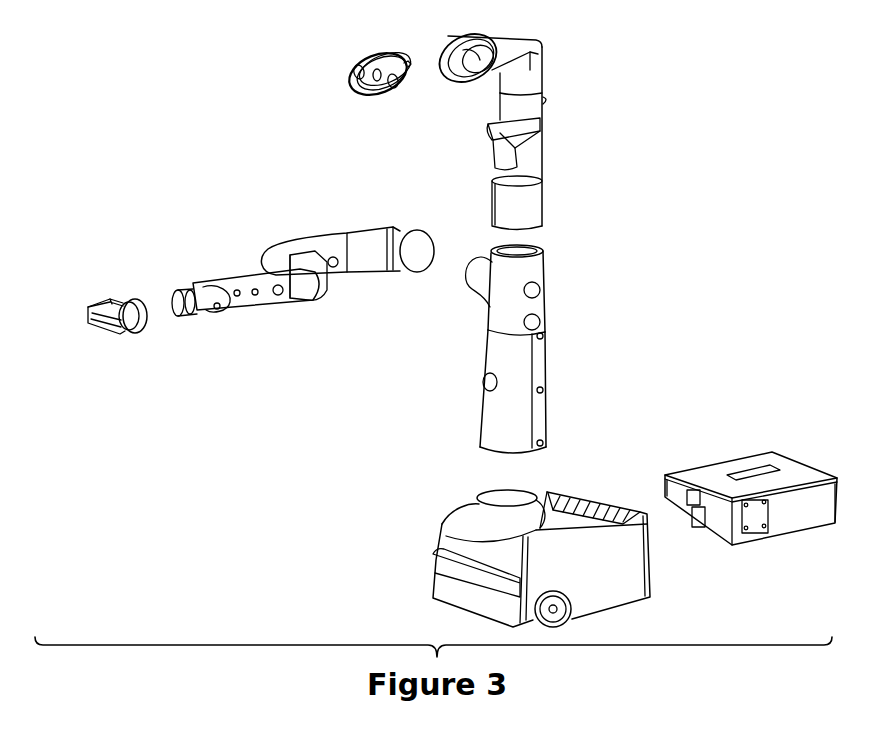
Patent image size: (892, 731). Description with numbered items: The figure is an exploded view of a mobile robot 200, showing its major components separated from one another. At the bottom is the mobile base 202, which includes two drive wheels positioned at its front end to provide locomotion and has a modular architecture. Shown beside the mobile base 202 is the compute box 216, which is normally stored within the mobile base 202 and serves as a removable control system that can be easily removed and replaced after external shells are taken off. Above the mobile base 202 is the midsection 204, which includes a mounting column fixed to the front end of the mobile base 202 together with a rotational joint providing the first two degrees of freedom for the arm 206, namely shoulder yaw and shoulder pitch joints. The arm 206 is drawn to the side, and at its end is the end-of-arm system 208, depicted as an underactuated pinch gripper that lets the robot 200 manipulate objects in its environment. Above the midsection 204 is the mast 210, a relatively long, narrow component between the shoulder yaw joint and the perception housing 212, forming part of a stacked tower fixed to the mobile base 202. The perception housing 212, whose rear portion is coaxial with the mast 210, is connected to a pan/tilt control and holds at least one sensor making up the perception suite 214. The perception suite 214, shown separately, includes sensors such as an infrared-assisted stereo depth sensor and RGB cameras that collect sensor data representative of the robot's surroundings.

The robot 200 is at (122, 139).
The mobile base 202 is at (388, 555).
The midsection 204 is at (572, 369).
The arm 206 is at (330, 337).
The end-of-arm system (EOAS) 208 is at (138, 358).
The mast 210 is at (578, 176).
The perception housing 212 is at (585, 61).
The perception suite 214 is at (352, 108).
The compute box 216 is at (766, 421).